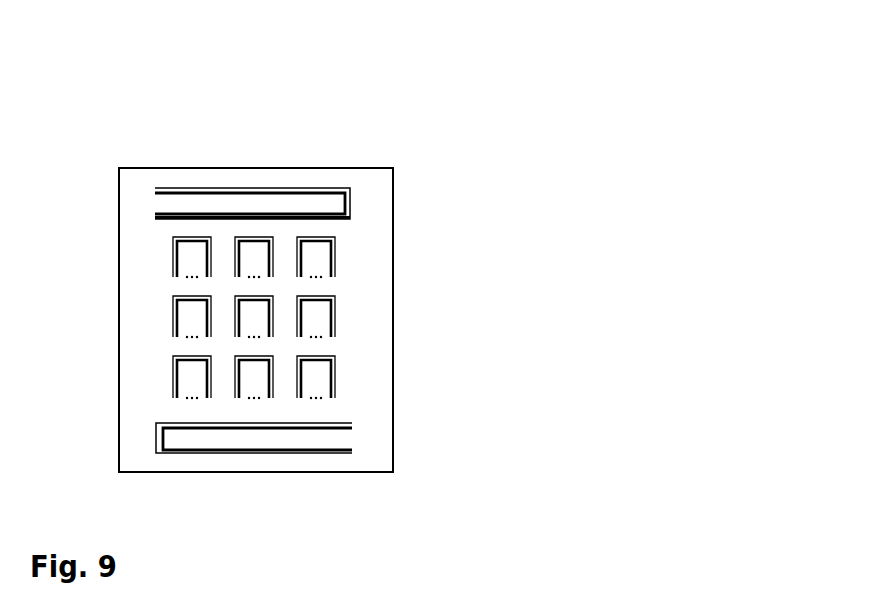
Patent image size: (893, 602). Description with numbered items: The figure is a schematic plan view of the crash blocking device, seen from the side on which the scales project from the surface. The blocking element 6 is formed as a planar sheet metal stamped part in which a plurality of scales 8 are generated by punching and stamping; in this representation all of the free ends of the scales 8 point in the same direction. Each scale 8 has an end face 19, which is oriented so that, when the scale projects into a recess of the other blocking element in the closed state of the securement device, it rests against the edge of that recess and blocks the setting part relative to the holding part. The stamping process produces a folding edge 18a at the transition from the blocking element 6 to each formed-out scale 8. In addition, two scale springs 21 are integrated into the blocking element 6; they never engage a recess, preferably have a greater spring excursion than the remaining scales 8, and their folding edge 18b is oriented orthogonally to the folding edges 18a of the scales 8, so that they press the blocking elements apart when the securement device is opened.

The blocking element 6 is at (364, 242).
The scale 8 is at (192, 316).
The scale end face 19 is at (193, 244).
The folding edge of scale 18a is at (317, 337).
The folding edge of scale spring 18b is at (159, 203).
The scale spring 21 is at (319, 204).